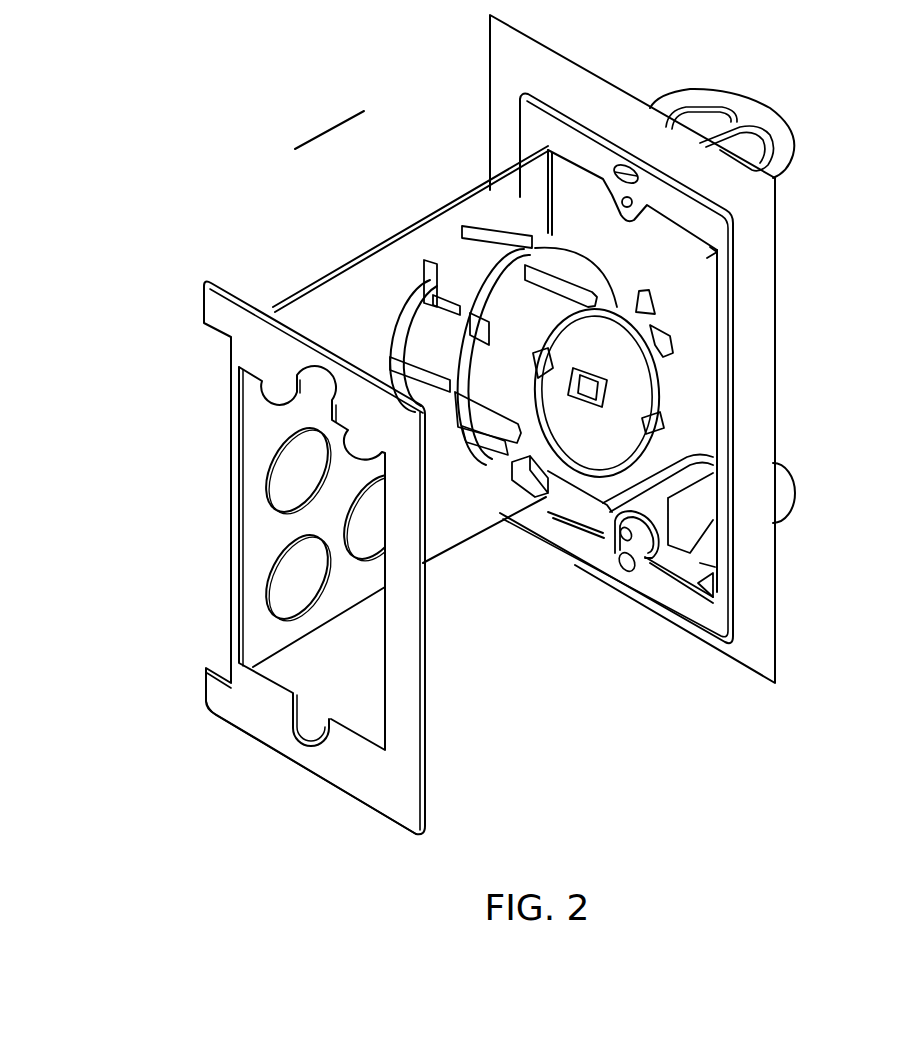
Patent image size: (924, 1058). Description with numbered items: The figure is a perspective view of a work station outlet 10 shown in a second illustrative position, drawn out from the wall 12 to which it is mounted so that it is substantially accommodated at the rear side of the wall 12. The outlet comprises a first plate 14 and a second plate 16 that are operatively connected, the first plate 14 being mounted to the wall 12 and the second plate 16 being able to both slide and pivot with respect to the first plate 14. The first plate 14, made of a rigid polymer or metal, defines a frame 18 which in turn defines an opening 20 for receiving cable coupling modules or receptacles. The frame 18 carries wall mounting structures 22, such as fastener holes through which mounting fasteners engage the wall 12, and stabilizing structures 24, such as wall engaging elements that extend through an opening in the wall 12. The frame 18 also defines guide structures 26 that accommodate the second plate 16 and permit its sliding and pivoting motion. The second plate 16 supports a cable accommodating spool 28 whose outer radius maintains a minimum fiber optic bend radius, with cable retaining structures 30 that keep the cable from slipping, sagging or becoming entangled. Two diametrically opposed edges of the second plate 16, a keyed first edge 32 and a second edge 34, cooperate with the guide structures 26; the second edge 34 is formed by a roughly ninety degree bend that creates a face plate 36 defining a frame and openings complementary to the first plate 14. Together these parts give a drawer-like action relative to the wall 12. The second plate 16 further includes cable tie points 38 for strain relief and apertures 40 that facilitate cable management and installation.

The work station outlet 10 is at (230, 170).
The wall 12 is at (515, 70).
The first plate 14 is at (700, 607).
The second plate 16 is at (381, 255).
The frame 18 is at (690, 217).
The opening 20 is at (697, 375).
The wall mounting structures 22 is at (619, 540).
The stabilizing structures 24 is at (783, 138).
The guide structures 26 is at (542, 146).
The cable accommodating spool 28 is at (445, 358).
The cable retaining structures 30 is at (505, 240).
The first edge 32 is at (550, 193).
The second edge 34 is at (240, 523).
The face plate 36 is at (257, 710).
The cable tie points 38 is at (545, 447).
The apertures 40 is at (287, 467).